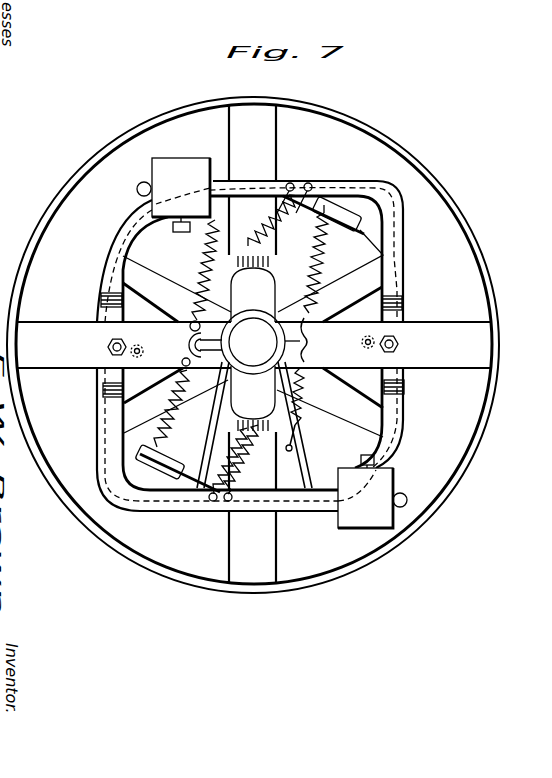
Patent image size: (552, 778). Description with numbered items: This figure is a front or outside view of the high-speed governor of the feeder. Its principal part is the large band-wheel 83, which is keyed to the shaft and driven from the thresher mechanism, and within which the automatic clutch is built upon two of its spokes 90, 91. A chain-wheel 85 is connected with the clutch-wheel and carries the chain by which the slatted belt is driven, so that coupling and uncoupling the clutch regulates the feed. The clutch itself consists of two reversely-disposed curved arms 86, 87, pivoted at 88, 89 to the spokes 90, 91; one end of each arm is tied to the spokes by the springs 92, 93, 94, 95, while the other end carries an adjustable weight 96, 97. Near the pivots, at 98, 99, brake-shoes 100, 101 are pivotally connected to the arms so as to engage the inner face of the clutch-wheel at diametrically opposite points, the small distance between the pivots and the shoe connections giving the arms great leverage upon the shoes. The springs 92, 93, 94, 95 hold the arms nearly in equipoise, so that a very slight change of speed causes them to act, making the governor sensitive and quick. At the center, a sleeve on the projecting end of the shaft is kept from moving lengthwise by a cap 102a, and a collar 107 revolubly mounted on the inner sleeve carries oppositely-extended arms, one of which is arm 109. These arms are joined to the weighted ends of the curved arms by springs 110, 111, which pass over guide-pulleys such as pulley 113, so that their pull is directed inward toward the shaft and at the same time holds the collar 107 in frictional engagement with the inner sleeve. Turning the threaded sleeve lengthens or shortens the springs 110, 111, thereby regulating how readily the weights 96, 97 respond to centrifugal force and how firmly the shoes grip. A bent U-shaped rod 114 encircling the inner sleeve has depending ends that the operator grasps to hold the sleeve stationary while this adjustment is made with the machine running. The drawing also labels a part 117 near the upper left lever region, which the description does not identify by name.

The band-wheel 83 is at (480, 441).
The chain-wheel 85 is at (290, 277).
The curved arm 86 is at (401, 418).
The curved arm 87 is at (110, 437).
The pivot 88 is at (400, 344).
The pivot 89 is at (108, 349).
The spoke 90 is at (452, 369).
The spoke 91 is at (55, 366).
The spring 92 is at (170, 391).
The spring 93 is at (326, 254).
The spring 94 is at (199, 275).
The spring 95 is at (300, 421).
The adjustable weight 96 is at (172, 165).
The adjustable weight 97 is at (356, 515).
The pivotal connection 98 is at (312, 368).
The pivotal connection 99 is at (143, 350).
The brake-shoe 100 is at (406, 289).
The brake-shoe 101 is at (100, 310).
The cap 102a is at (308, 338).
The collar 107 is at (252, 373).
The arm of collar 109 is at (253, 388).
The spring 110 is at (270, 217).
The spring 111 is at (243, 466).
The guide-pulley 113 is at (296, 441).
The U-shaped rod 114 is at (158, 447).
The upper left lever 117 is at (188, 288).